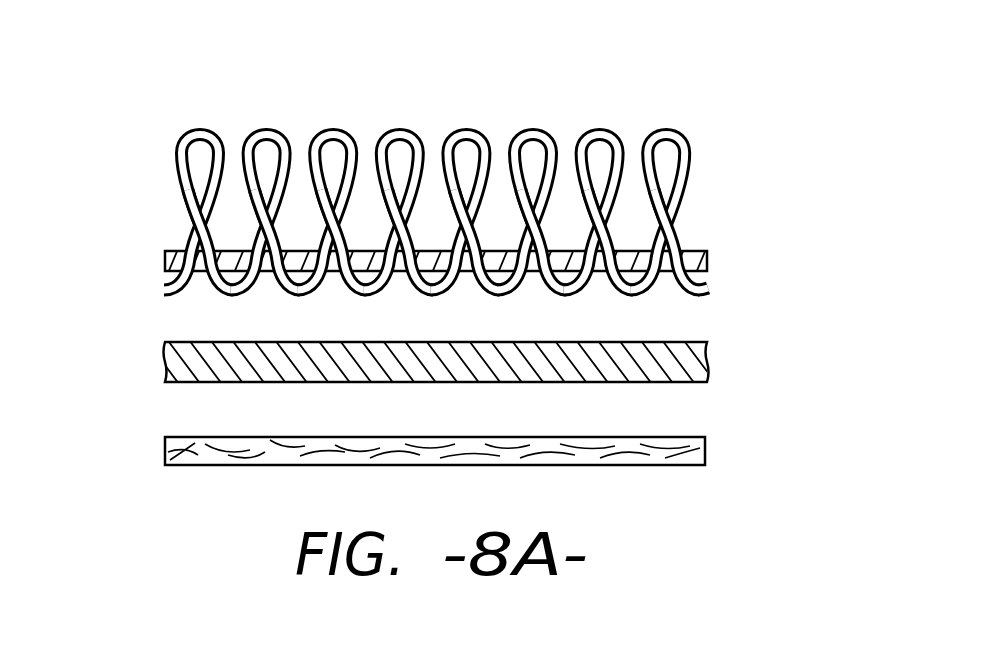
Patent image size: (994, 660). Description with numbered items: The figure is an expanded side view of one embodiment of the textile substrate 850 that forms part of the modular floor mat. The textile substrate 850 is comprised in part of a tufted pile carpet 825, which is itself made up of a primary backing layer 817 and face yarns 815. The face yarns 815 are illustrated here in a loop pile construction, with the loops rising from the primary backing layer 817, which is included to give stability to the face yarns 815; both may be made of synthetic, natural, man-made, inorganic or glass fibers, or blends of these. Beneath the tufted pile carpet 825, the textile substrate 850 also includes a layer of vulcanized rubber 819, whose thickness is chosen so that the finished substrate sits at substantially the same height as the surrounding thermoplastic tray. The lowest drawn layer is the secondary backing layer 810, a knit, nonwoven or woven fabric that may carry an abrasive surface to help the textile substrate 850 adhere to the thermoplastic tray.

The textile substrate 850 is at (760, 121).
The tufted pile carpet 825 is at (126, 113).
The face yarns 815 is at (400, 127).
The primary backing layer 817 is at (683, 252).
The layer of vulcanized rubber 819 is at (688, 342).
The secondary backing layer 810 is at (688, 437).